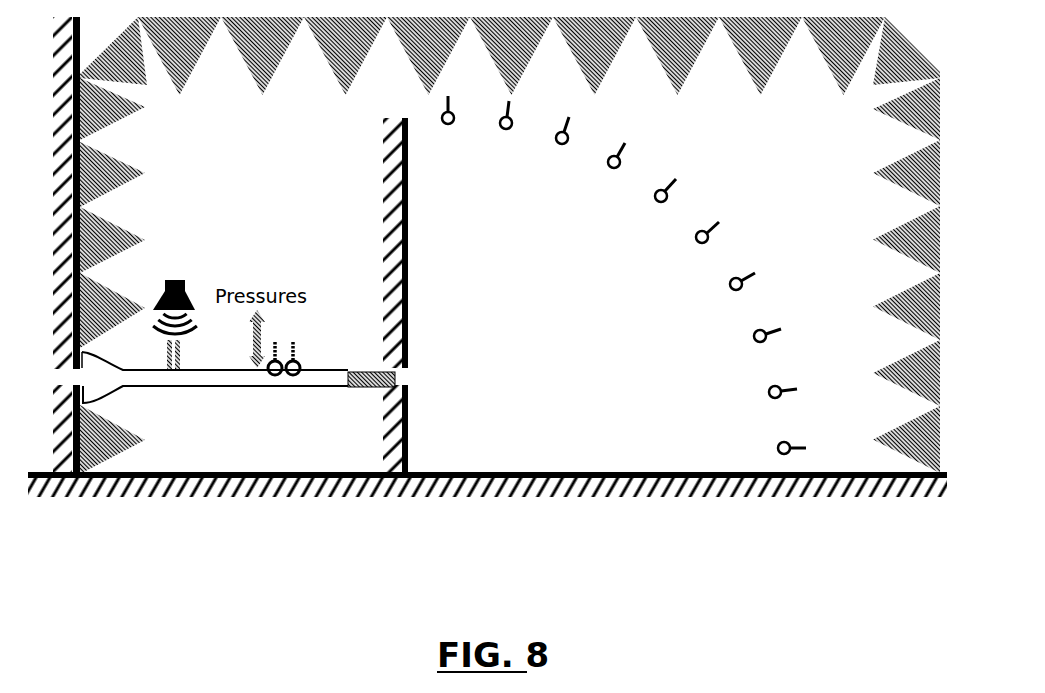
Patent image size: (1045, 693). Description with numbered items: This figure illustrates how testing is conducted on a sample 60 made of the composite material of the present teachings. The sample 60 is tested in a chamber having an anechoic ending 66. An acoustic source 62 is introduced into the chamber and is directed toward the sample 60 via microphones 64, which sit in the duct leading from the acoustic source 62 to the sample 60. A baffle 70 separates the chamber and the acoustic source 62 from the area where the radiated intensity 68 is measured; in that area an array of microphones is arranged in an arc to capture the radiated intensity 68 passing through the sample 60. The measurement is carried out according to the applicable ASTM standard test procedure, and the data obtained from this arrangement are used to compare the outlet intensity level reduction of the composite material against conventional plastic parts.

The sample 60 is at (372, 390).
The acoustic source 62 is at (176, 280).
The microphones 64 is at (283, 336).
The anechoic ending 66 is at (108, 394).
The radiated intensity 68 is at (752, 183).
The baffle 70 is at (384, 200).